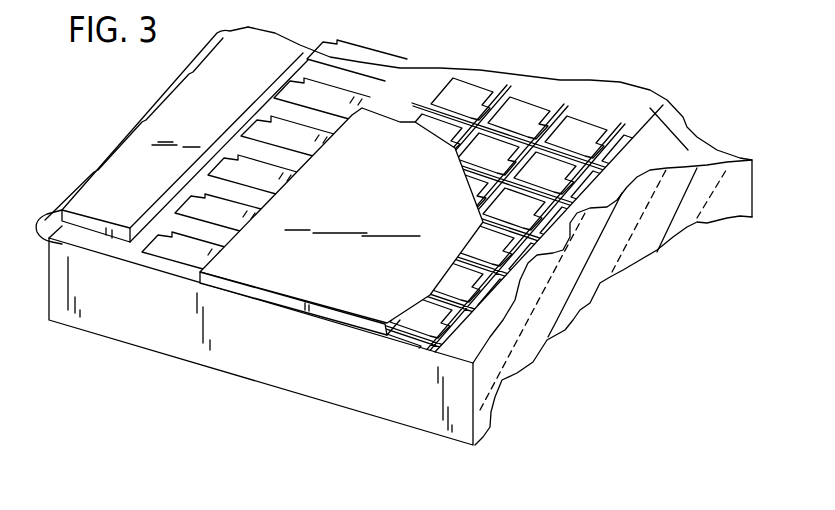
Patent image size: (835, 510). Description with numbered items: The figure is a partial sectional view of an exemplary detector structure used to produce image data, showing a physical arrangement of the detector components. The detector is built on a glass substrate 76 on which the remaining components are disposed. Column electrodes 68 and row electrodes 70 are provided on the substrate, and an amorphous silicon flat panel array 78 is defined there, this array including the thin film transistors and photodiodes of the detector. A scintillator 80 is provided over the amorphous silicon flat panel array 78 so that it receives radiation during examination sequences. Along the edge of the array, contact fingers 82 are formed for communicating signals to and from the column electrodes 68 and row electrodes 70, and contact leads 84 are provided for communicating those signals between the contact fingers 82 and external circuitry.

The column electrodes 68 is at (511, 283).
The row electrodes 70 is at (650, 108).
The glass substrate 76 is at (432, 422).
The amorphous silicon flat panel array 78 is at (405, 334).
The scintillator 80 is at (297, 280).
The contact fingers 82 is at (217, 237).
The contact leads 84 is at (50, 242).